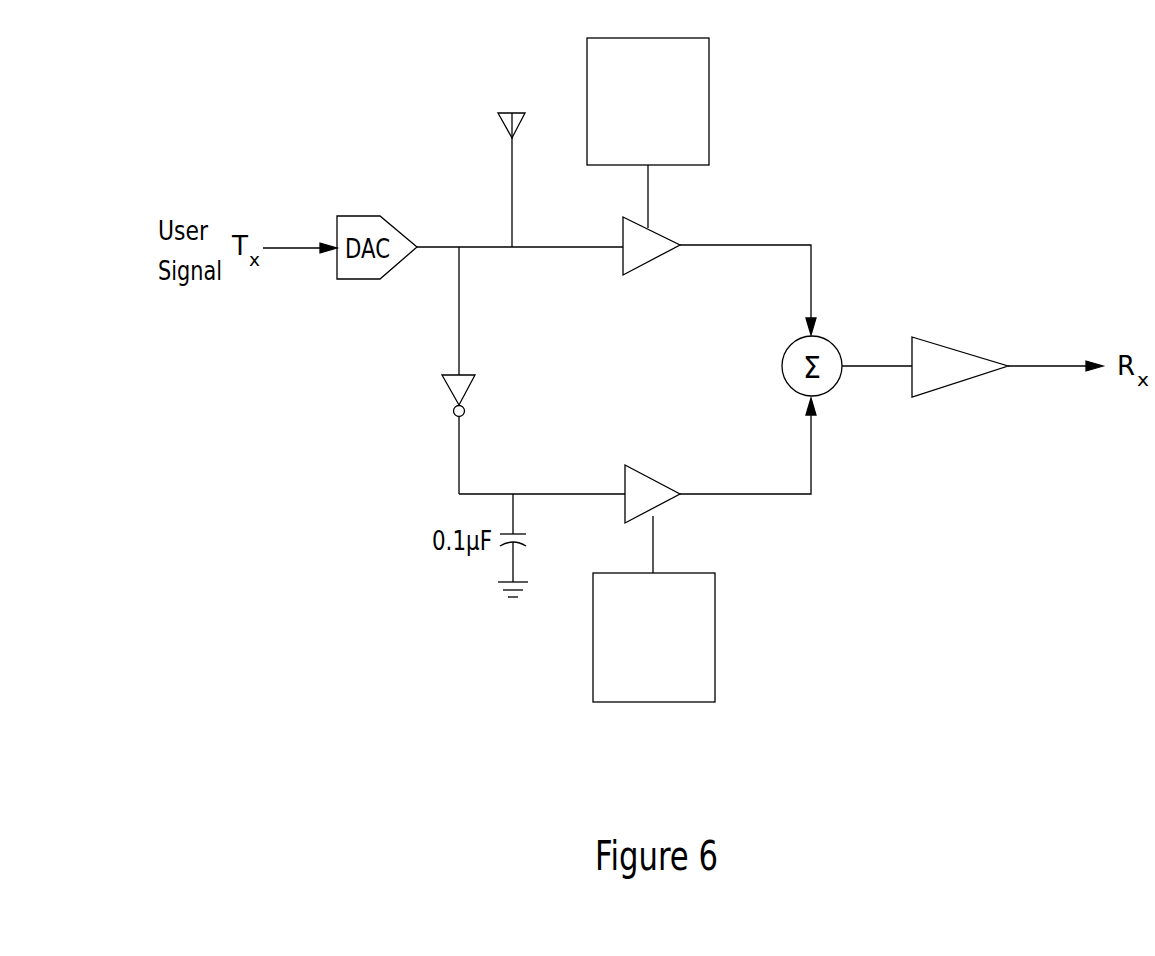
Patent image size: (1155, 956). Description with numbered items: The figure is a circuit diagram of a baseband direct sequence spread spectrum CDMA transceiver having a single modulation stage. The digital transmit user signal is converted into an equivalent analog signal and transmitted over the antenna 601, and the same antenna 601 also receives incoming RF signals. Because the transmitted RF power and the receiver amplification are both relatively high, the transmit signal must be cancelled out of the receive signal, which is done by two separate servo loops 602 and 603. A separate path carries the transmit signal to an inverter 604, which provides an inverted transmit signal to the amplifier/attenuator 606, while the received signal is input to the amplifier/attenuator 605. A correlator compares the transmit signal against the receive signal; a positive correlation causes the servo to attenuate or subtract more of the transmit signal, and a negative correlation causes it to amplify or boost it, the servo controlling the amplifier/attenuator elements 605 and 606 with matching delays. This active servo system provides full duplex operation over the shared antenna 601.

The antenna 601 is at (506, 100).
The servo loop 602 is at (700, 72).
The servo loop 603 is at (705, 609).
The inverter 604 is at (452, 396).
The amplifier/attenuator 605 is at (647, 268).
The amplifier/attenuator 606 is at (653, 478).